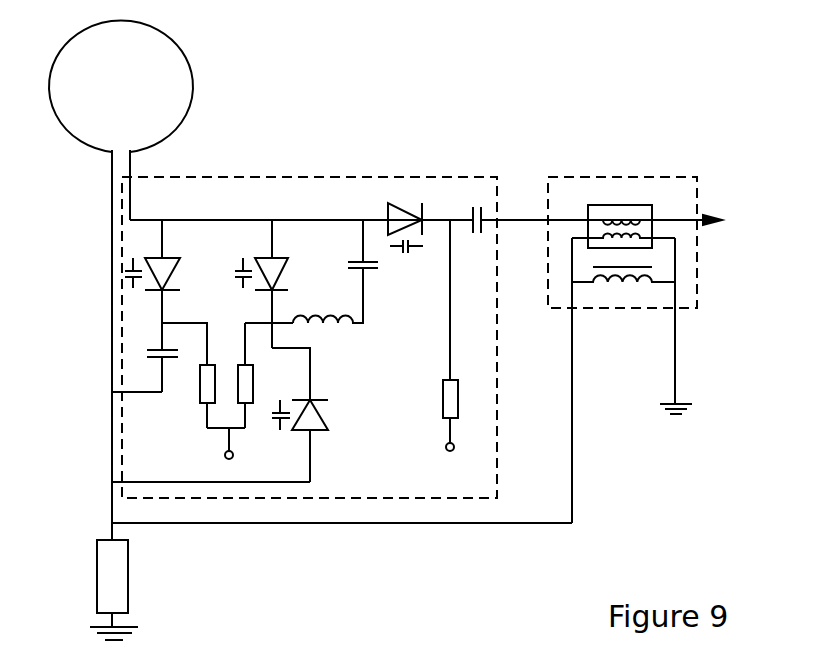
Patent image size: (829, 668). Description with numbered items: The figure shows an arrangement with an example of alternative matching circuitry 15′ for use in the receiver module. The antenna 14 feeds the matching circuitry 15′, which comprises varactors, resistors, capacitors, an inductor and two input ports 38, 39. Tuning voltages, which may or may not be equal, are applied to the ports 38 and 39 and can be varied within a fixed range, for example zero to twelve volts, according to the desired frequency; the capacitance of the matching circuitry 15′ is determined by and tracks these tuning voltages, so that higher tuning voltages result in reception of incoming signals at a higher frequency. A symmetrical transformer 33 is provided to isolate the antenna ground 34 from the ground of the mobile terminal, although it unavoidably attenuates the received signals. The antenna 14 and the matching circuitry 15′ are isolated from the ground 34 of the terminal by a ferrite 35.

The antenna 14 is at (197, 74).
The alternative matching circuitry 15′ is at (318, 277).
The symmetrical transformer 33 is at (595, 153).
The antenna ground 34 is at (129, 629).
The ferrite 35 is at (133, 576).
The input port 38 is at (244, 450).
The input port 39 is at (447, 449).